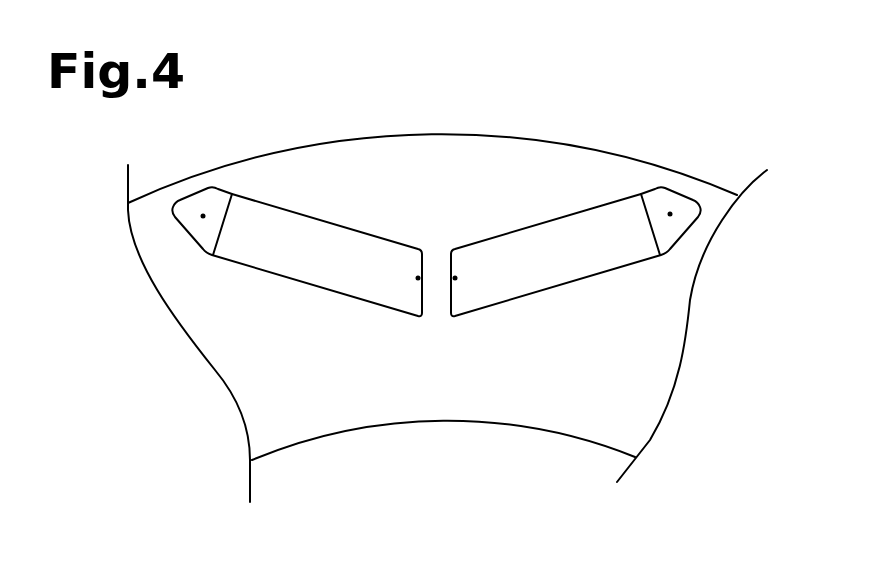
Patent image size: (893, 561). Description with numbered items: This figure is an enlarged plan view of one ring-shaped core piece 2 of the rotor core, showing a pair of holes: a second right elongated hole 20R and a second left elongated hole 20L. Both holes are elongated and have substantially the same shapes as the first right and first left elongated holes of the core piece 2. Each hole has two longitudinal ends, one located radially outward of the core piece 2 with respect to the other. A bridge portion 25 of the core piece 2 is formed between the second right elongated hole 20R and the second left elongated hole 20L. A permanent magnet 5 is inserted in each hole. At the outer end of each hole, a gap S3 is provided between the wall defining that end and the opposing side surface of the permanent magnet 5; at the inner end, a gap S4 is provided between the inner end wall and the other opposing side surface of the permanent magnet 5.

The core piece 2 is at (712, 203).
The second left elongated hole 20L is at (305, 220).
The second right elongated hole 20R is at (520, 232).
The gap S3 is at (203, 216).
The gap S4 is at (455, 243).
The permanent magnet 5 is at (302, 275).
The bridge portion 25 is at (436, 309).